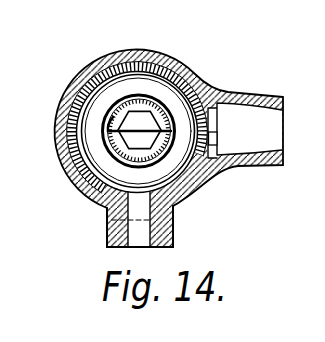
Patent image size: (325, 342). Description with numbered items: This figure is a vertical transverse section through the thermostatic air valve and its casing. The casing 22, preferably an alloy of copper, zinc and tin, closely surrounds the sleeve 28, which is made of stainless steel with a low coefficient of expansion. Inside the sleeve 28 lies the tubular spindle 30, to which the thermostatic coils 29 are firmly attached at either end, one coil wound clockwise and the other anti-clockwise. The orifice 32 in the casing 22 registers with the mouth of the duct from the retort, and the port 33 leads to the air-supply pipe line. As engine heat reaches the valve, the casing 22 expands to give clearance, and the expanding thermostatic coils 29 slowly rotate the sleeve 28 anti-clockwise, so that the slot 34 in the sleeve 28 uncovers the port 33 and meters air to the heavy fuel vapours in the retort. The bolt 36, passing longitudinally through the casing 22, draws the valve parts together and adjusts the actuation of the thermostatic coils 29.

The casing 22 is at (133, 50).
The sleeve 28 is at (201, 77).
The thermostatic coils 29 is at (168, 153).
The tubular spindle 30 is at (115, 146).
The orifice 32 is at (128, 231).
The port 33 is at (218, 138).
The slot 34 is at (172, 196).
The bolt 36 is at (118, 141).